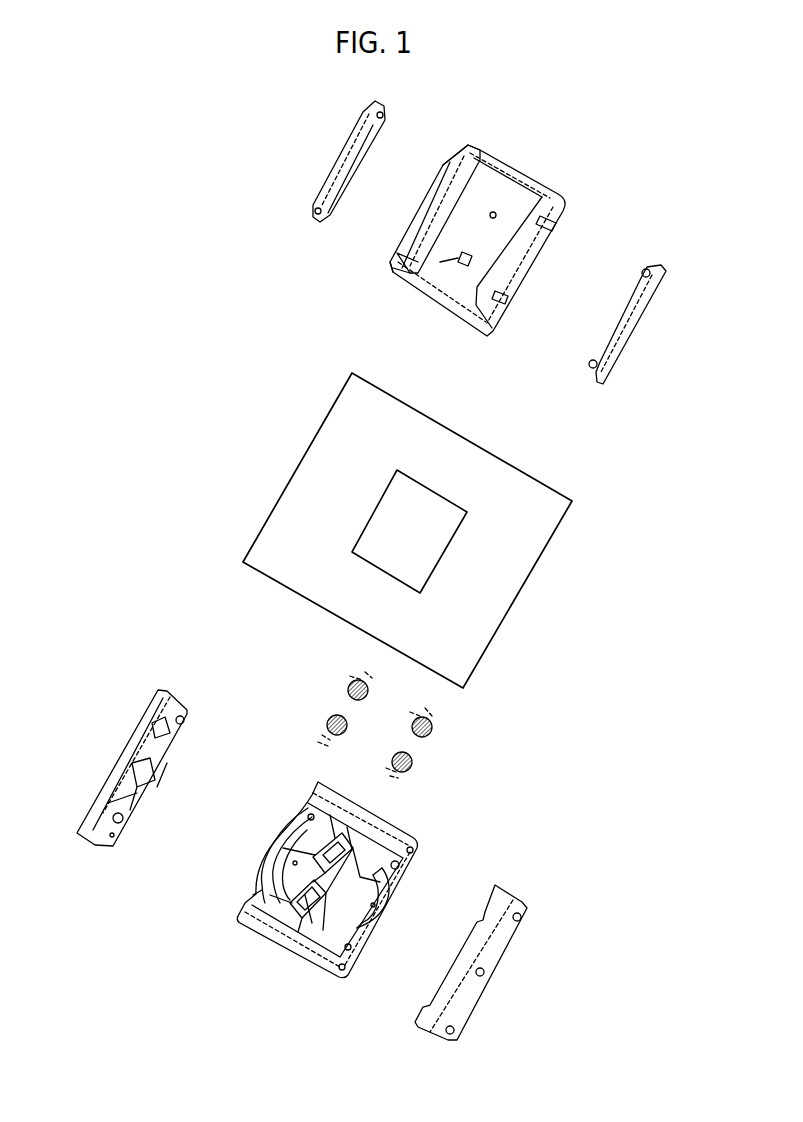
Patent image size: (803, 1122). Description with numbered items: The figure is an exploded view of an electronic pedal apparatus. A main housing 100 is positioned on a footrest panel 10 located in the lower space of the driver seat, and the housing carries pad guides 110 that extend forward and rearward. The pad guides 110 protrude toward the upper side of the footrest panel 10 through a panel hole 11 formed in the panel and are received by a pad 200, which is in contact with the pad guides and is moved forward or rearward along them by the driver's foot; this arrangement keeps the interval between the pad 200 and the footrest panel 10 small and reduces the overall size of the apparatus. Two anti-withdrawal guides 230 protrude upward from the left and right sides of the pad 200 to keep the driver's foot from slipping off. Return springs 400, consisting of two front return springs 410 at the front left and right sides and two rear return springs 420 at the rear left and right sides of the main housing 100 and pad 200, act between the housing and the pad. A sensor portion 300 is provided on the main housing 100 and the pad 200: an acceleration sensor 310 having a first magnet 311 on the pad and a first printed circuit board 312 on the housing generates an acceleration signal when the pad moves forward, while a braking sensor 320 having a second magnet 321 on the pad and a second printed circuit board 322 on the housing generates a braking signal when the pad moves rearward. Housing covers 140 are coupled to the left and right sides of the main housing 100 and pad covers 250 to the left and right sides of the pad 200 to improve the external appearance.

The footrest panel 10 is at (313, 474).
The panel hole 11 is at (433, 556).
The main housing 100 is at (337, 894).
The pad guide 110 is at (277, 850).
The housing cover 140 is at (120, 764).
The pad 200 is at (473, 235).
The anti-withdrawal guide 230 is at (421, 208).
The pad cover 250 is at (340, 152).
The sensor portion 300 is at (390, 273).
The acceleration sensor 310 is at (382, 456).
The first magnet 311 is at (494, 212).
The first printed circuit board 312 is at (308, 815).
The braking sensor 320 is at (301, 580).
The second magnet 321 is at (452, 262).
The second printed circuit board 322 is at (253, 895).
The return spring 400 is at (400, 730).
The front return spring 410 is at (348, 683).
The rear return spring 420 is at (327, 718).